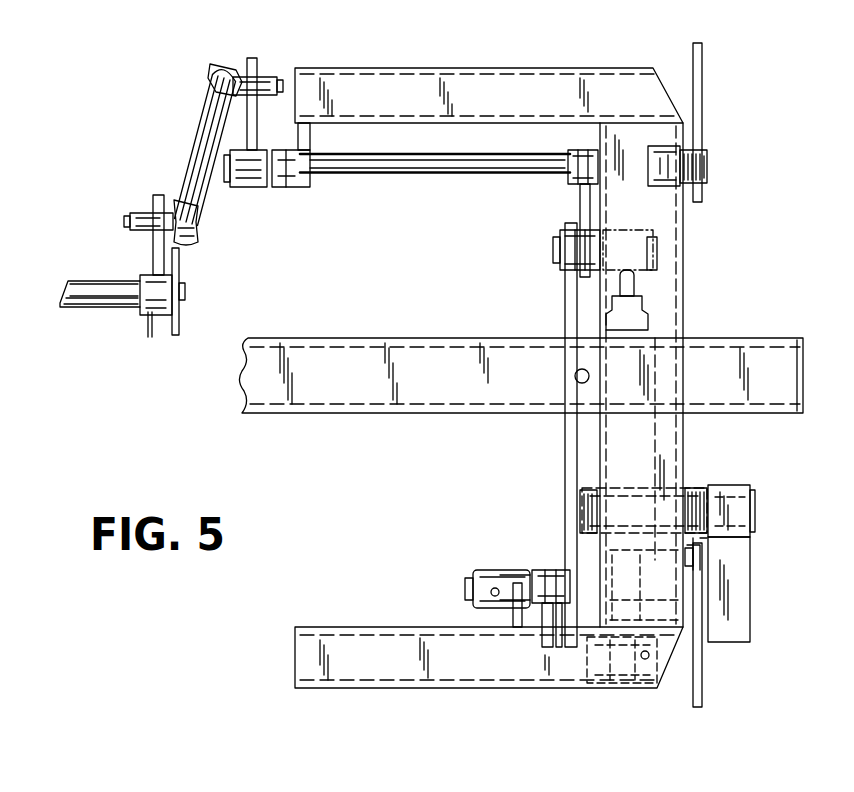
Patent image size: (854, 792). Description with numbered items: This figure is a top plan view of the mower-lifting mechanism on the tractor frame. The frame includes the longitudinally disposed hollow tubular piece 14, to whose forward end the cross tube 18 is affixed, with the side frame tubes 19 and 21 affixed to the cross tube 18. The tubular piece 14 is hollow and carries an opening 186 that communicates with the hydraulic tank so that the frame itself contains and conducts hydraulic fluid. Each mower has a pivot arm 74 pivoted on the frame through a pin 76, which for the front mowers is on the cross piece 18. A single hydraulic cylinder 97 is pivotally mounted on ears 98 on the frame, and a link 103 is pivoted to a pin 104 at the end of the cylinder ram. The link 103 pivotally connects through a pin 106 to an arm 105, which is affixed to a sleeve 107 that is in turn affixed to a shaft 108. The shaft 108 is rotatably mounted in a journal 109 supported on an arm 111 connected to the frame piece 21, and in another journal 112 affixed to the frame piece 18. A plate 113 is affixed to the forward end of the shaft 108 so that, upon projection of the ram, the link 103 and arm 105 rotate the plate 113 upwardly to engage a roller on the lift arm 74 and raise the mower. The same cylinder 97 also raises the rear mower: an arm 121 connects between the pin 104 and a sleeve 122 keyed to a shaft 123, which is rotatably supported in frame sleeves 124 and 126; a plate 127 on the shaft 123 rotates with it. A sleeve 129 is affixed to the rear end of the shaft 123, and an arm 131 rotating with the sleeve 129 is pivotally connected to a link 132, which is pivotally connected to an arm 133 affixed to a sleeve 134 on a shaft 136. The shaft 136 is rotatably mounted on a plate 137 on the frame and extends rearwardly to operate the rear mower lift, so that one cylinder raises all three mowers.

The tubular piece 14 is at (338, 413).
The cross tube 18 is at (686, 290).
The side frame tube 19 is at (400, 63).
The side frame tube 21 is at (368, 688).
The pivot arm 74 is at (737, 618).
The pivot pin 76 is at (753, 503).
The hydraulic cylinder 97 is at (650, 465).
The ears 98 is at (627, 690).
The link 103 is at (565, 448).
The pin 104 is at (556, 254).
The arm 105 is at (560, 655).
The pin 106 is at (535, 625).
The sleeve 107 is at (548, 570).
The shaft 108 is at (505, 570).
The journal 109 is at (487, 569).
The arm 111 is at (512, 615).
The journal 112 is at (710, 547).
The plate 113 is at (703, 668).
The arm 121 is at (585, 205).
The sleeve 122 is at (568, 180).
The shaft 123 is at (395, 180).
The frame sleeve 124 is at (300, 190).
The frame sleeve 126 is at (652, 188).
The plate 127 is at (702, 125).
The sleeve 129 is at (237, 188).
The arm 131 is at (265, 104).
The link 132 is at (205, 122).
The arm 133 is at (150, 240).
The sleeve 134 is at (158, 316).
The shaft 136 is at (83, 280).
The plate 137 is at (183, 260).
The opening 186 is at (575, 376).